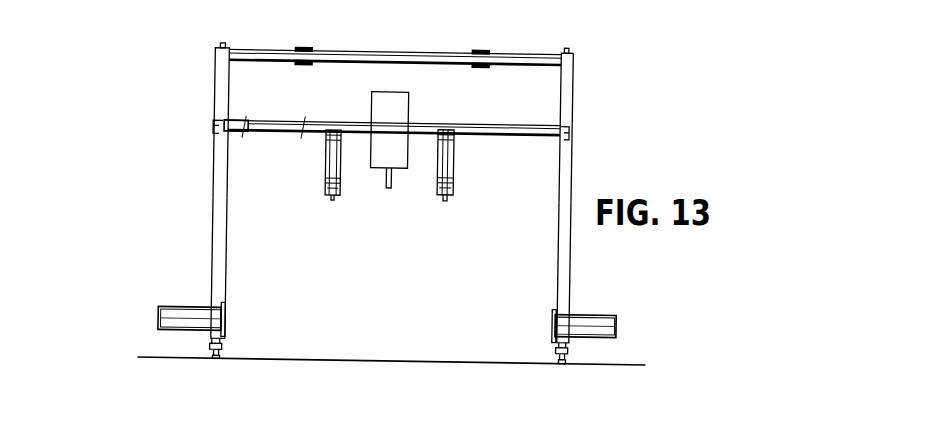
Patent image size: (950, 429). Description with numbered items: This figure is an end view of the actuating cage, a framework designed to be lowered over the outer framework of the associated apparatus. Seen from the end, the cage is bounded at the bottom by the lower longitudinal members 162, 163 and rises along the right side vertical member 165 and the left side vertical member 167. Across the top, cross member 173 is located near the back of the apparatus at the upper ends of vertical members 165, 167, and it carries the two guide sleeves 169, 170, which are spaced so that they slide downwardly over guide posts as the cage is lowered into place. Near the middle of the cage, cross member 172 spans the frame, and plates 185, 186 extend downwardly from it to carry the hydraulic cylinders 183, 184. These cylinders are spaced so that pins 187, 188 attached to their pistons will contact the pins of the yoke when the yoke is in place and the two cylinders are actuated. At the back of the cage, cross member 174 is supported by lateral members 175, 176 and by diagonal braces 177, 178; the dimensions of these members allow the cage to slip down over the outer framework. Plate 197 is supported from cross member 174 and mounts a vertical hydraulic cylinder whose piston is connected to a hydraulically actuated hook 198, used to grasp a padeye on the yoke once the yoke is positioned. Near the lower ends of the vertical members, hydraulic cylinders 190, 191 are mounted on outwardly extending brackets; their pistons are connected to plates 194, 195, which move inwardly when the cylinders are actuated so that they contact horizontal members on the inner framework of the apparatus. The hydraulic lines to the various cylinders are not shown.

The lower longitudinal member 162 is at (213, 348).
The lower longitudinal member 163 is at (569, 352).
The right side vertical member 165 is at (227, 262).
The left side vertical member 167 is at (559, 263).
The guide sleeve 169 is at (305, 50).
The guide sleeve 170 is at (477, 50).
The cross member 172 is at (268, 121).
The cross member 173 is at (386, 52).
The cross member 174 is at (533, 123).
The lateral member 175 is at (213, 131).
The lateral member 176 is at (567, 135).
The diagonal brace 177 is at (213, 92).
The diagonal brace 178 is at (571, 94).
The hydraulic cylinder 183 is at (332, 163).
The hydraulic cylinder 184 is at (448, 163).
The plate 185 is at (327, 144).
The plate 186 is at (453, 143).
The pin 187 is at (335, 200).
The pin 188 is at (444, 199).
The hydraulic cylinder 190 is at (193, 318).
The hydraulic cylinder 191 is at (619, 329).
The plate 194 is at (228, 329).
The plate 195 is at (554, 316).
The plate 197 is at (407, 99).
The hydraulically actuated hook 198 is at (392, 183).